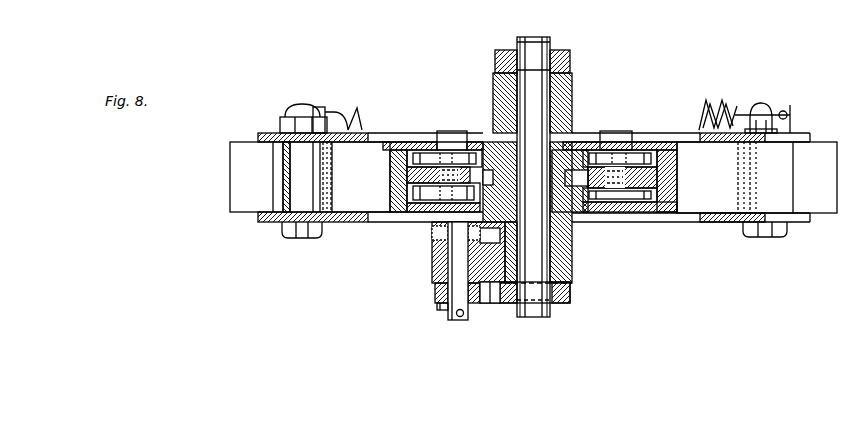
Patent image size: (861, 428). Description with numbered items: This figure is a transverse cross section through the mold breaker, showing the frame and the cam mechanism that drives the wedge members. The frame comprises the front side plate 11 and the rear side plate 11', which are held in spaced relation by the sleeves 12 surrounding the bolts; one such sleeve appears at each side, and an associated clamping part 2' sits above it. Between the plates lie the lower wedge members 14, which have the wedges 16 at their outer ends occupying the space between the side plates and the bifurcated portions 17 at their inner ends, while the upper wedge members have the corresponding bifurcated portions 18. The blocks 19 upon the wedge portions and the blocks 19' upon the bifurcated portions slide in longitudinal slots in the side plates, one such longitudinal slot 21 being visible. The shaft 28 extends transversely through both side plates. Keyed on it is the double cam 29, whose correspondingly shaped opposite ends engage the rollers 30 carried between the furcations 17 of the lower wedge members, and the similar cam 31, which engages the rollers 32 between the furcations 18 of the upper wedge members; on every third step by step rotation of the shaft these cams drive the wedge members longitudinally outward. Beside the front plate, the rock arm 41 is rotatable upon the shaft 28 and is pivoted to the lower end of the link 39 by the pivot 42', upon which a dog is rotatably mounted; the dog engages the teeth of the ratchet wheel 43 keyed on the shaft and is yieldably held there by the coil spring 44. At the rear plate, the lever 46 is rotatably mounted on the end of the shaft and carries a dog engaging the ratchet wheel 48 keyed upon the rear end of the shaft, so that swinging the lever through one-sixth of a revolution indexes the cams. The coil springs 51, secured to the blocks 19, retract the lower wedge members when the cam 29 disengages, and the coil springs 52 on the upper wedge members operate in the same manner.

The clamping plate 2' is at (302, 127).
The front side plate 11 is at (614, 195).
The rear side plate 11' is at (704, 162).
The sleeve 12 is at (302, 163).
The lower wedge member 14 is at (373, 212).
The wedge 16 is at (243, 211).
The bifurcated portion 17 is at (393, 213).
The bifurcated portion 18 is at (394, 150).
The block 19 is at (313, 242).
The block 19' is at (435, 250).
The longitudinal slot 21 is at (410, 136).
The shaft 28 is at (538, 41).
The double cam 29 is at (568, 224).
The roller 30 is at (426, 192).
The cam 31 is at (490, 148).
The roller 32 is at (453, 158).
The link 39 is at (437, 266).
The rock arm 41 is at (488, 305).
The pivot 42' is at (460, 288).
The ratchet wheel 43 is at (571, 292).
The coil spring 44 is at (443, 311).
The lever 46 is at (566, 86).
The ratchet wheel 48 is at (563, 58).
The coil spring 51 is at (333, 110).
The coil spring 52 is at (699, 120).